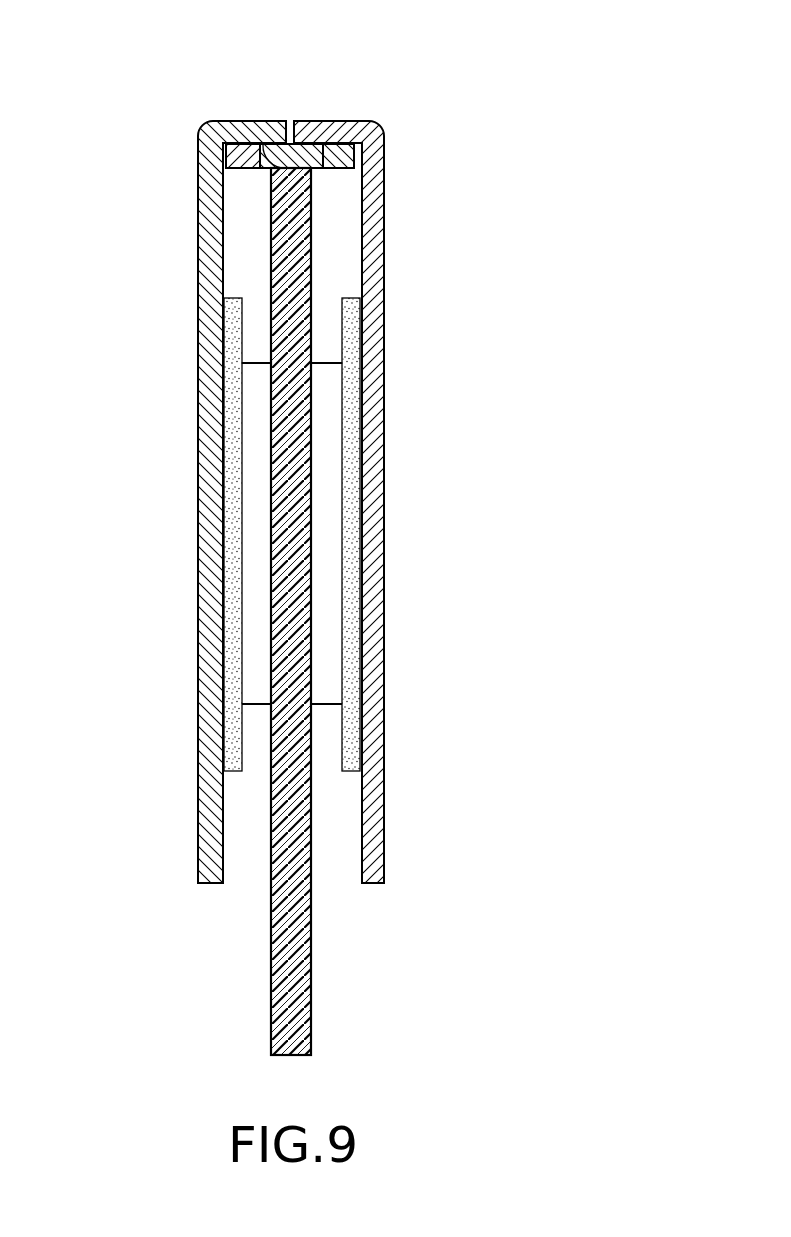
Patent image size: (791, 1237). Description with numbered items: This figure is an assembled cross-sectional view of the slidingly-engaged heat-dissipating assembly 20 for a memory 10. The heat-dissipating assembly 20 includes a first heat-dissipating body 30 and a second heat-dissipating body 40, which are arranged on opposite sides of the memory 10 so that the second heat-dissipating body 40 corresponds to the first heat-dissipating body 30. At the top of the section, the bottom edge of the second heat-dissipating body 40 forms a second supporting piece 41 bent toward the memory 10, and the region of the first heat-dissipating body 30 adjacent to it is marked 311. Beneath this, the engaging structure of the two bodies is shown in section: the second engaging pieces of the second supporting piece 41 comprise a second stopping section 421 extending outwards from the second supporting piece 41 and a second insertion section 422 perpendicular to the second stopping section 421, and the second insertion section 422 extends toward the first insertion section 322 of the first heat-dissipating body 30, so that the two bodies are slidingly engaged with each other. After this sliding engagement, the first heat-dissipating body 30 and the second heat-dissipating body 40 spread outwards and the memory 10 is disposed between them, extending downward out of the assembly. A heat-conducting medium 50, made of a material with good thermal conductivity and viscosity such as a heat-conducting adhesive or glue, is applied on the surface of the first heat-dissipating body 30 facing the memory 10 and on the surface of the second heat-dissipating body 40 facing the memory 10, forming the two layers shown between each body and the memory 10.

The memory 10 is at (297, 910).
The heat-dissipating assembly 20 is at (291, 448).
The first heat-dissipating body 30 is at (403, 484).
The second heat-dissipating body 40 is at (180, 484).
The second supporting piece 41 is at (253, 120).
The heat-conducting medium 50 is at (233, 588).
The right cap portion 311 is at (327, 120).
The first insertion section 322 is at (247, 150).
The second stopping section 421 is at (283, 120).
The second insertion section 422 is at (343, 153).